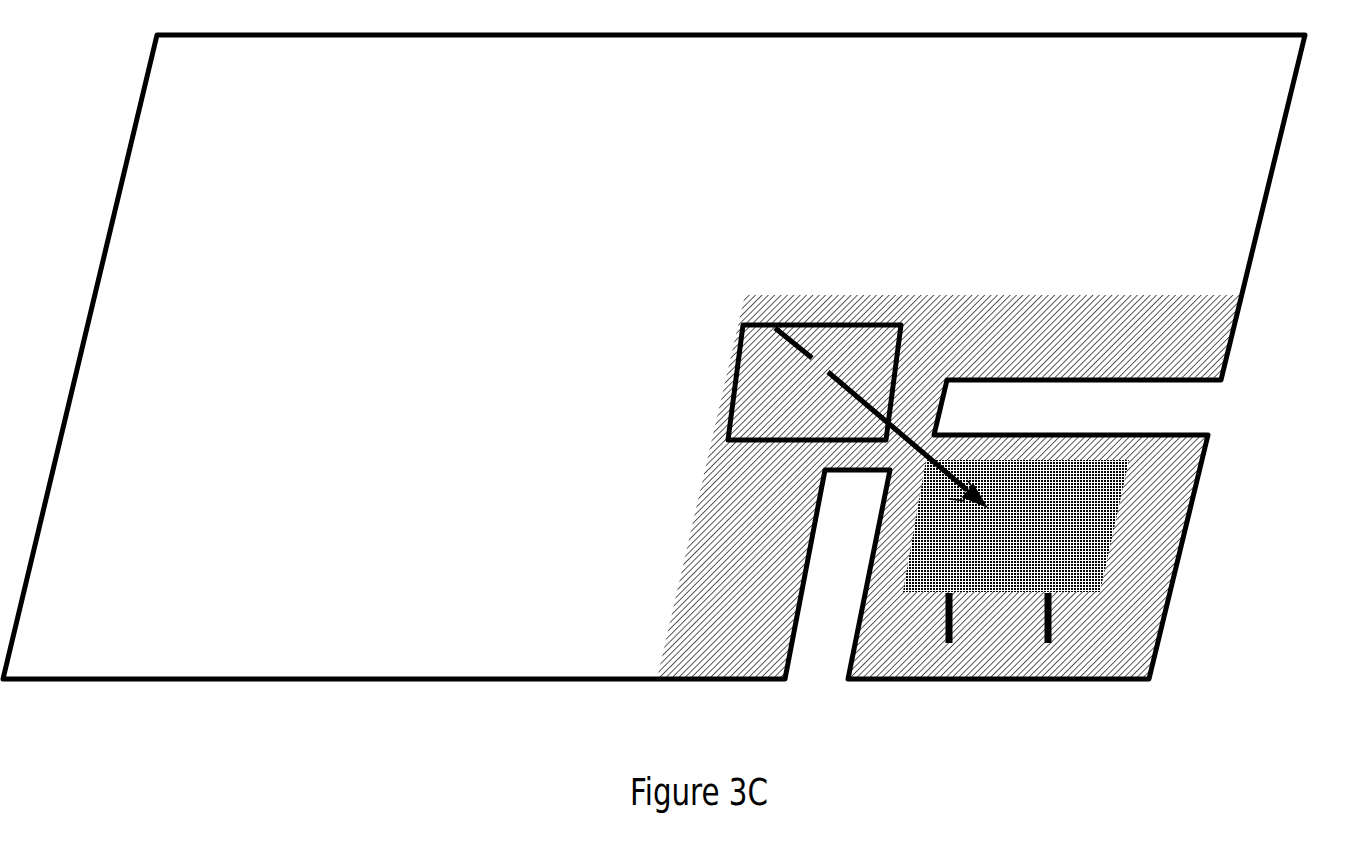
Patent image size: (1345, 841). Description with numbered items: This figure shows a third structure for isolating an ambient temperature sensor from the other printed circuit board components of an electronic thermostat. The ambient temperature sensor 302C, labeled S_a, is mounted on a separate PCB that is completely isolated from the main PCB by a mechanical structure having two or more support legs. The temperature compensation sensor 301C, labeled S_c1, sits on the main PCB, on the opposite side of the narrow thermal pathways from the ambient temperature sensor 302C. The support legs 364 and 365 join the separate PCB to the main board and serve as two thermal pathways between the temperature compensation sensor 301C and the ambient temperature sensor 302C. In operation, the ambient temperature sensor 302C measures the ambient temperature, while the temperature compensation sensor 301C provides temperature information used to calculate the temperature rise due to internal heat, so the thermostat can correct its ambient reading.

The temperature compensation sensor 301C is at (863, 354).
The ambient temperature sensor 302C is at (1080, 504).
The support leg 364 is at (944, 633).
The support leg 365 is at (1043, 628).